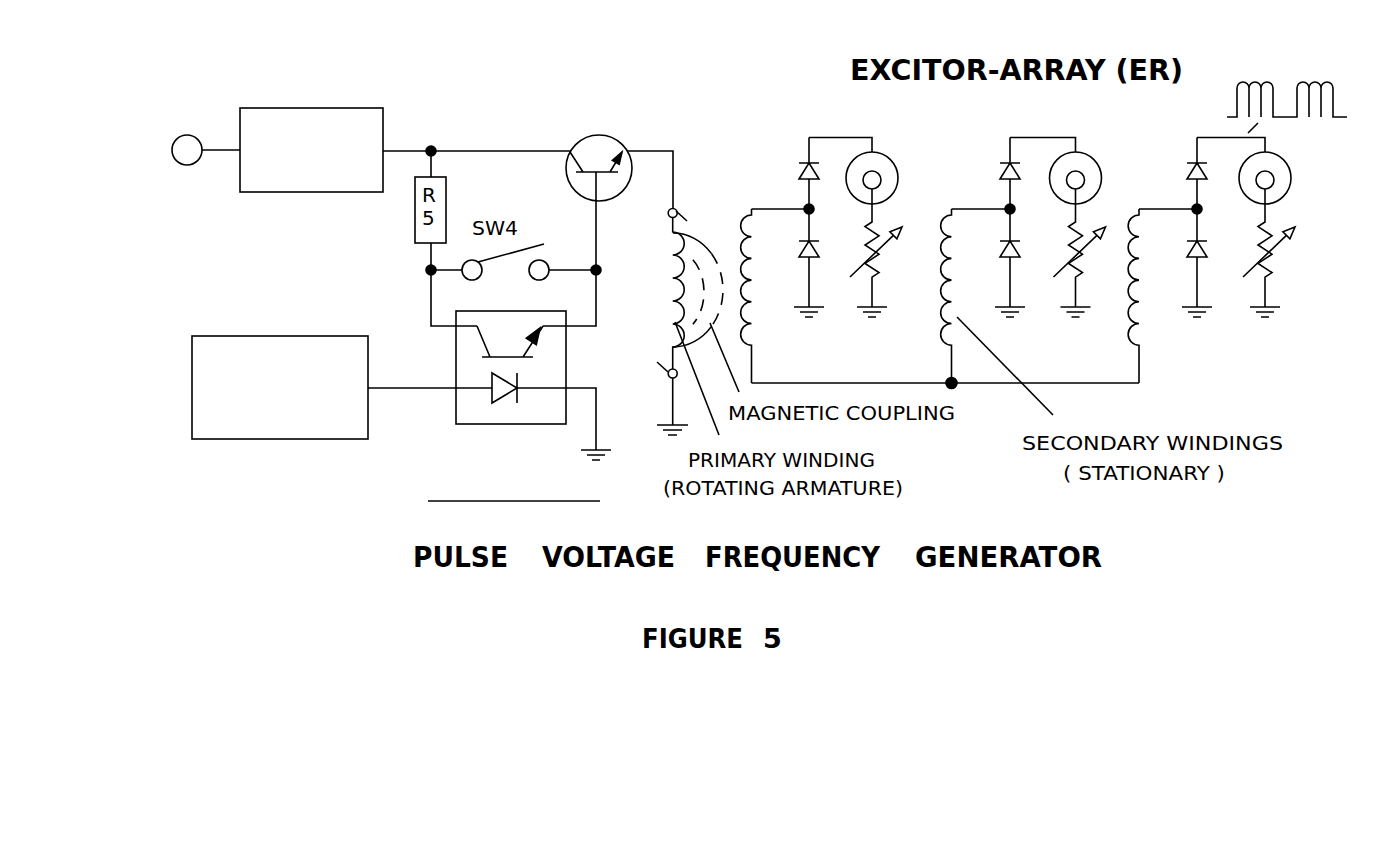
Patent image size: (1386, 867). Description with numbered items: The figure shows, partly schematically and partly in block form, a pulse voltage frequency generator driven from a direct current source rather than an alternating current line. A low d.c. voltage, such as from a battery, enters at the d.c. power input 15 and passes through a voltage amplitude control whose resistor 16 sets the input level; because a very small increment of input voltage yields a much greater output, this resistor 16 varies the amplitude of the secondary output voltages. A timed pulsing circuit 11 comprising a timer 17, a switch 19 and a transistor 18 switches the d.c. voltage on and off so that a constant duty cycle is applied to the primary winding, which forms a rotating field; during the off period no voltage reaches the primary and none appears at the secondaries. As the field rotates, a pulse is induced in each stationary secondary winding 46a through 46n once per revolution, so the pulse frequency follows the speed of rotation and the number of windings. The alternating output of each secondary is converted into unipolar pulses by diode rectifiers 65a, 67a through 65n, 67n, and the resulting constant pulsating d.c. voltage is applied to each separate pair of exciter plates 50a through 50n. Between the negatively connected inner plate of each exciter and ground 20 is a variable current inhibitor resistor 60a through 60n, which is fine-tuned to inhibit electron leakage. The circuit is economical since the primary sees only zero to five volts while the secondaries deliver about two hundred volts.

The variable pulsing circuit 11 is at (272, 347).
The D.C. power input 15 is at (190, 153).
The resistor 16 is at (312, 113).
The timer 17 is at (543, 373).
The transistor 18 is at (595, 152).
The switch 19 is at (510, 318).
The ground 20 is at (1275, 308).
The secondary winding 46a is at (755, 317).
The secondary winding 46n is at (1140, 313).
The exciter plate 50a is at (882, 160).
The exciter plate 50n is at (1292, 182).
The current inhibitor resistor 60a is at (892, 253).
The current inhibitor resistor 60n is at (1298, 248).
The diode rectifier 65a is at (805, 172).
The diode rectifier 65n is at (1185, 172).
The diode rectifier 67a is at (812, 257).
The diode rectifier 67n is at (1200, 255).